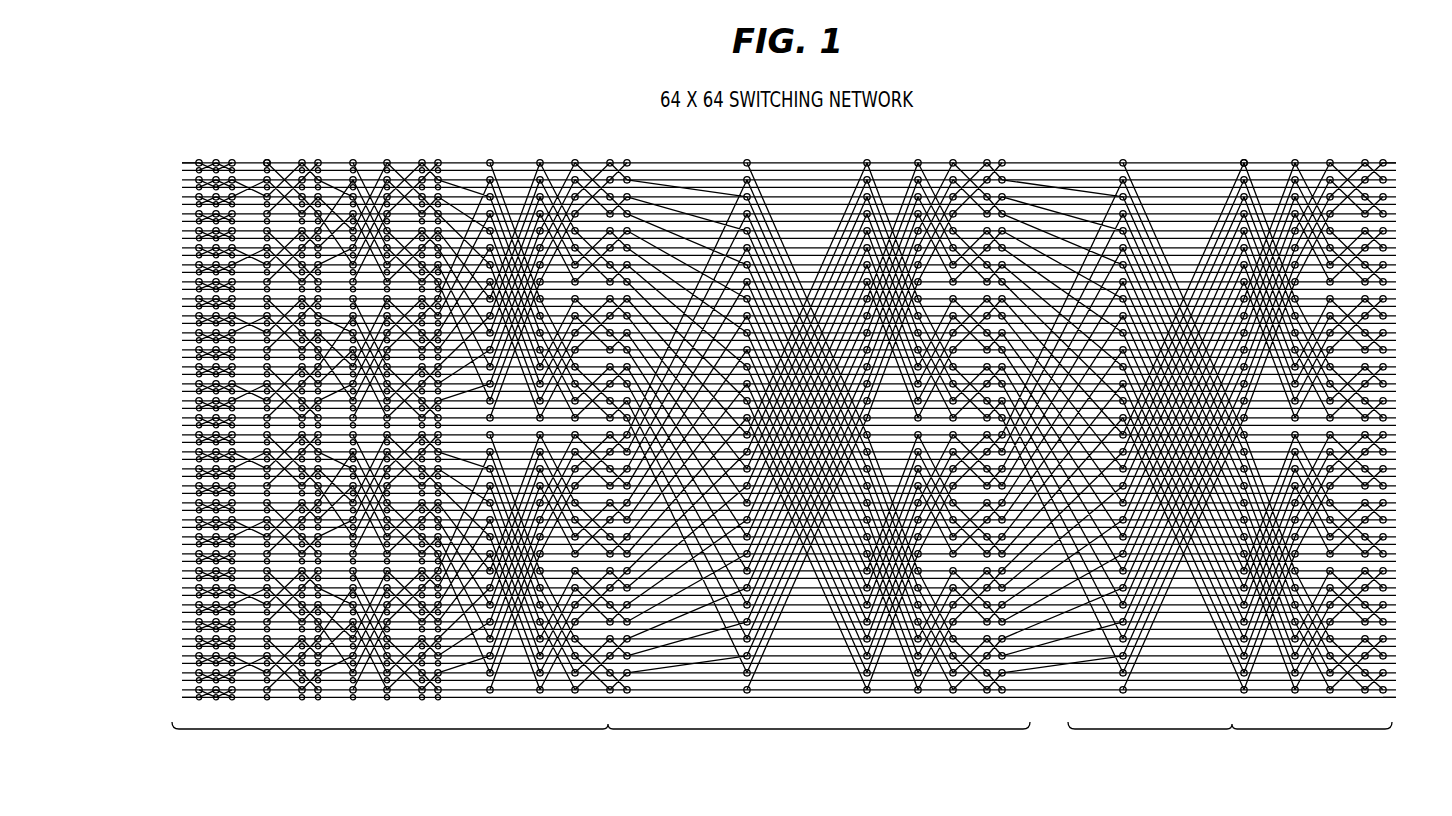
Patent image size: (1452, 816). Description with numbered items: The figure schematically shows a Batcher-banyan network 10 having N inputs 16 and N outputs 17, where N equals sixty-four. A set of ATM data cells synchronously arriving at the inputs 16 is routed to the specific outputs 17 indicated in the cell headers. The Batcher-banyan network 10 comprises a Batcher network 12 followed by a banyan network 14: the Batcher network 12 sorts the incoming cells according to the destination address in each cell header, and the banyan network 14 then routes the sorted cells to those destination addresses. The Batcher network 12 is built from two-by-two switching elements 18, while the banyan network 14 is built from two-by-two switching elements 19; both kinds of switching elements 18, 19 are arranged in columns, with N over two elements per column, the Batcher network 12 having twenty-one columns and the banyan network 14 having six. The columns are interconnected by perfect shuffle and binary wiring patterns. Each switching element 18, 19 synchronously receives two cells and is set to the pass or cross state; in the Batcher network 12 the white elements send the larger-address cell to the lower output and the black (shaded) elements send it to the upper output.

The Batcher-banyan network 10 is at (271, 109).
The Batcher network 12 is at (652, 750).
The banyan network 14 is at (1274, 745).
The inputs 16 is at (171, 164).
The outputs 17 is at (1400, 160).
The switching element 18 is at (267, 159).
The switching element 19 is at (1246, 159).